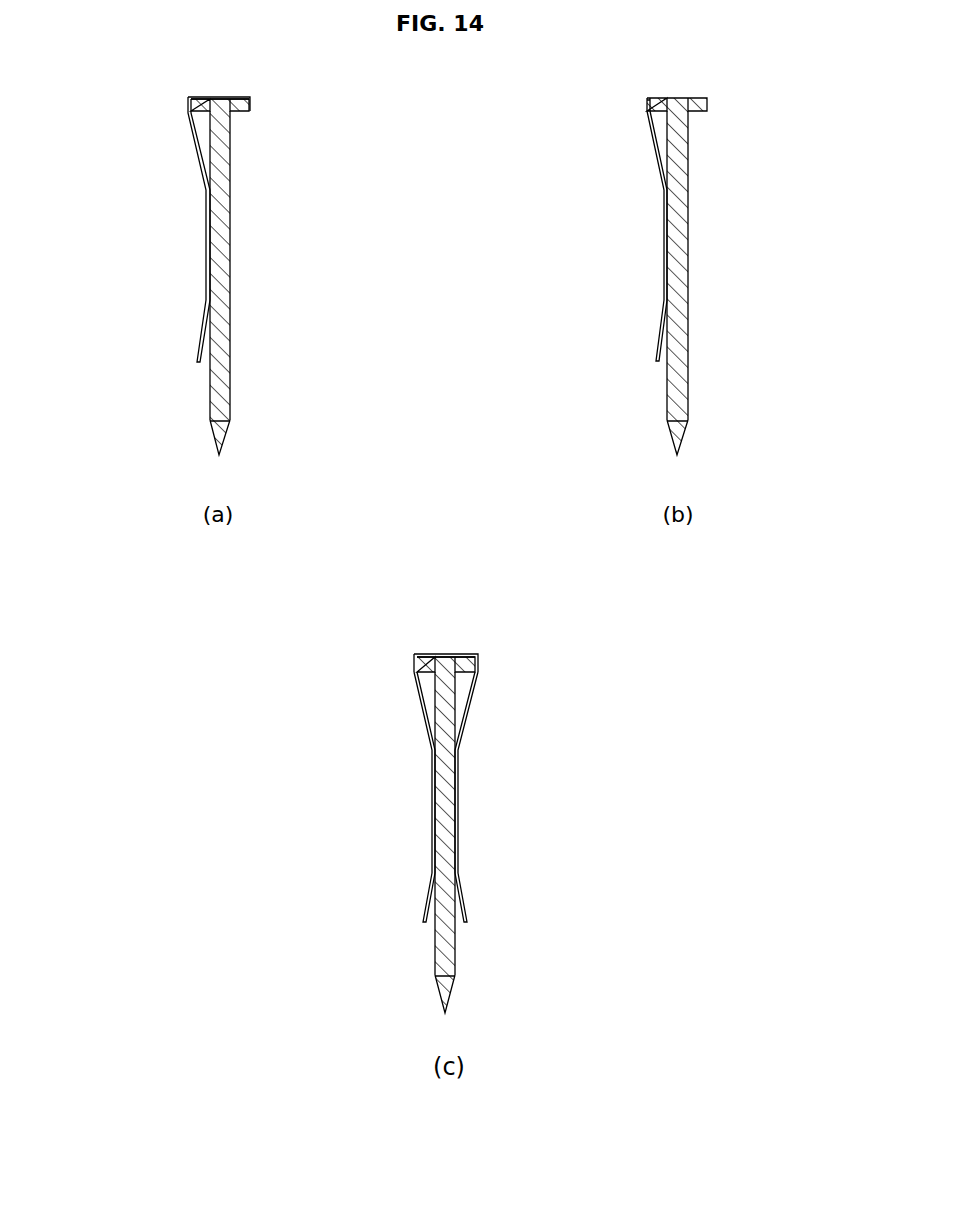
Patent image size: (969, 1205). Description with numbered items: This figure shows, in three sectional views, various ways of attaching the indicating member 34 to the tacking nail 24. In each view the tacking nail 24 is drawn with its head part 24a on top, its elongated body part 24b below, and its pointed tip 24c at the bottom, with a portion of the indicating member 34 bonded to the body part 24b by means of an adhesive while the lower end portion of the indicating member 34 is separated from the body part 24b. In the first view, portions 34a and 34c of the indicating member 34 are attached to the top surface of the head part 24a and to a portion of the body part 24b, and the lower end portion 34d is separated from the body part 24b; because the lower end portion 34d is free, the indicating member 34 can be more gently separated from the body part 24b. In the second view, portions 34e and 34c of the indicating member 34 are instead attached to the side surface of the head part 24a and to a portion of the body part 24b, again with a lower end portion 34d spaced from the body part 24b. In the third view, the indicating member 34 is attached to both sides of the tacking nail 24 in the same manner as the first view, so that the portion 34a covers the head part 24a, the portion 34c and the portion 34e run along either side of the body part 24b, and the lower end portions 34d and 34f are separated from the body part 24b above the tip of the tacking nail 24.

The tacking nail 24 is at (521, 554).
The head part 24a is at (250, 101).
The body part 24b is at (223, 240).
The nail tip 24c is at (505, 437).
The indicating member 34 is at (354, 506).
The portion of the indicating member 34a is at (191, 96).
The portion of the indicating member 34c is at (160, 190).
The lower end portion 34d is at (204, 343).
The portion of the indicating member 34e is at (647, 100).
The clip second leg end portion 34f is at (465, 906).